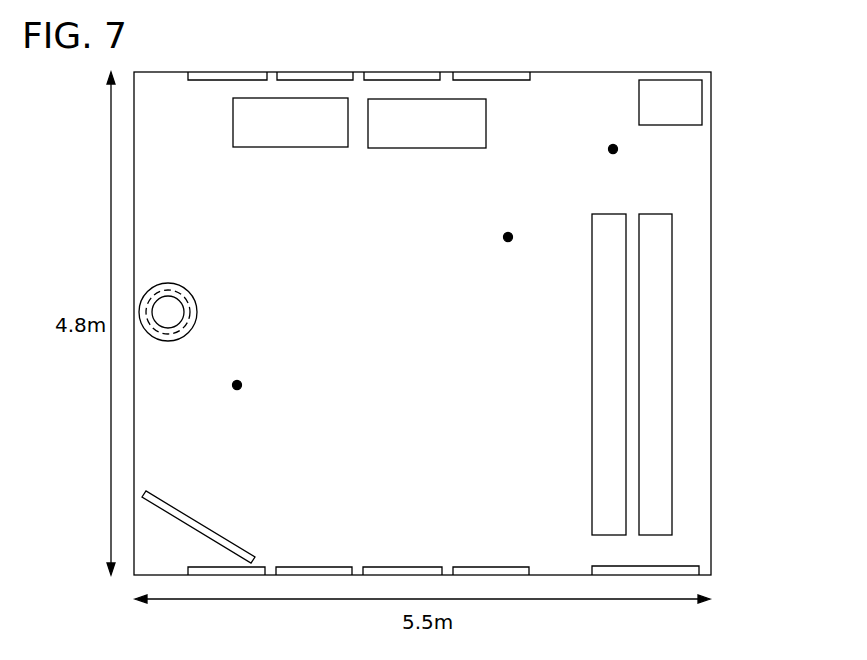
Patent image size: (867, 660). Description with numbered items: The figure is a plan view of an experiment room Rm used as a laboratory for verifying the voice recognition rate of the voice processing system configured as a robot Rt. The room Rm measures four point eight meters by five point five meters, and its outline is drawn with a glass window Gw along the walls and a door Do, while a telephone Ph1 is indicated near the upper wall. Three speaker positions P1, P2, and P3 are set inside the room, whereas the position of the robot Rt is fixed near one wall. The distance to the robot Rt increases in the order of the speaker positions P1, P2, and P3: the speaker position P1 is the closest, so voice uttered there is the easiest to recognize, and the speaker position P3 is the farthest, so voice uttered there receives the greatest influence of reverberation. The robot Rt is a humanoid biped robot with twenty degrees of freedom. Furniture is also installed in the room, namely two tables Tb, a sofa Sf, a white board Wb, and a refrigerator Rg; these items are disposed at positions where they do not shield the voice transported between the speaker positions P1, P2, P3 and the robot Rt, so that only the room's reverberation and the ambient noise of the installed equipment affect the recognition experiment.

The room Rm is at (712, 324).
The glass window Gw is at (205, 80).
The door Do is at (610, 566).
The table Tb is at (290, 148).
The photographing position Ph1 is at (529, 114).
The refrigerator Rg is at (685, 125).
The sofa Sf is at (592, 374).
The robot Rt is at (197, 312).
The white board Wb is at (203, 522).
The speaker position P1 is at (252, 402).
The speaker position P2 is at (525, 252).
The speaker position P3 is at (630, 161).